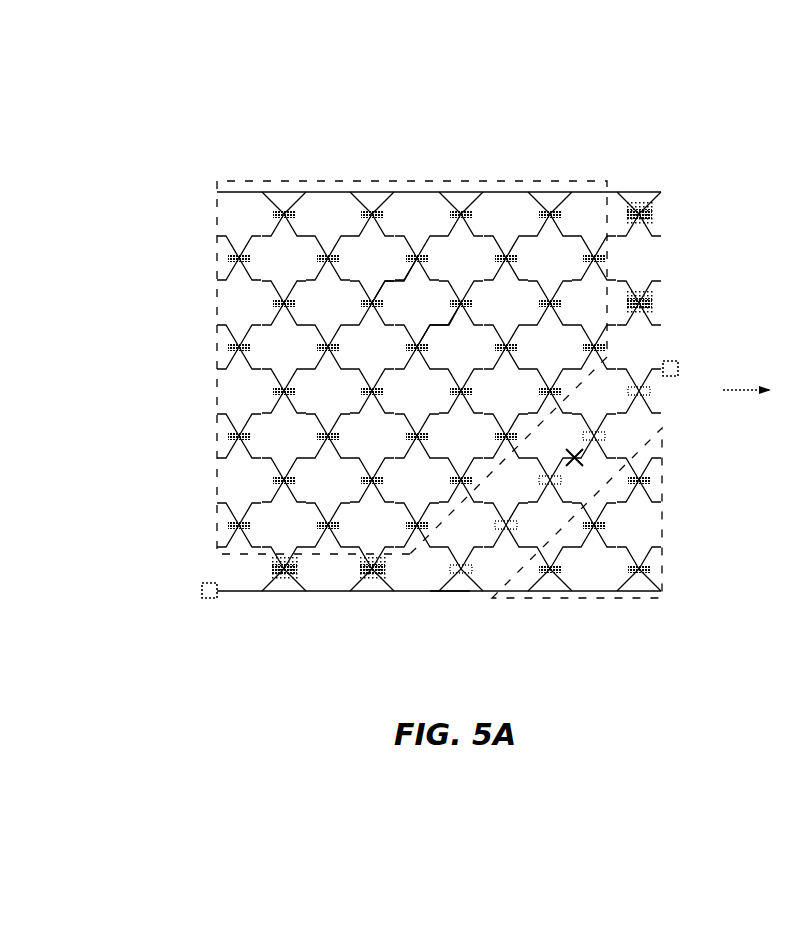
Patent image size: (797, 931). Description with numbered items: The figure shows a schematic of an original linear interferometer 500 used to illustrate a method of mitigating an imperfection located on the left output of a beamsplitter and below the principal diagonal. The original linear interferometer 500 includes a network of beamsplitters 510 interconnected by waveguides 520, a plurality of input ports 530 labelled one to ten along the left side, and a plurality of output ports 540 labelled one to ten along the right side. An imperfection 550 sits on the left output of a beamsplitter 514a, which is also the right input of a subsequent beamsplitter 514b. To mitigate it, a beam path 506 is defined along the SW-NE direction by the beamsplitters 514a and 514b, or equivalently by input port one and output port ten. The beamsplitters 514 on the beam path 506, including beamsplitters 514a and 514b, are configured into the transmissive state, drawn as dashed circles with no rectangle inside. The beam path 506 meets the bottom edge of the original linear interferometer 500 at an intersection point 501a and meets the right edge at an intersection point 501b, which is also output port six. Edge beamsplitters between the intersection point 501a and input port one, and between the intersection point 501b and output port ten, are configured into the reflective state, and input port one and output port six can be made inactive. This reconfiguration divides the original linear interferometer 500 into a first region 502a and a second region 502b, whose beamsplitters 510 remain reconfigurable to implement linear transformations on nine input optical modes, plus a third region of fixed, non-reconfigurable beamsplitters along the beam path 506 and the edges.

The original linear interferometer 500 is at (157, 373).
The input ports 530 is at (188, 167).
The beamsplitters 510 is at (326, 340).
The waveguides 520 is at (432, 314).
The first region 502a is at (512, 183).
The second region 502b is at (530, 598).
The beam path 506 is at (616, 391).
The beamsplitters on the beam path 514 is at (500, 541).
The beamsplitter 514a is at (618, 437).
The subsequent beamsplitter 514b is at (569, 486).
The imperfection 550 is at (586, 461).
The intersection point 501a is at (447, 592).
The intersection point 501b is at (679, 355).
The output ports 540 is at (694, 614).